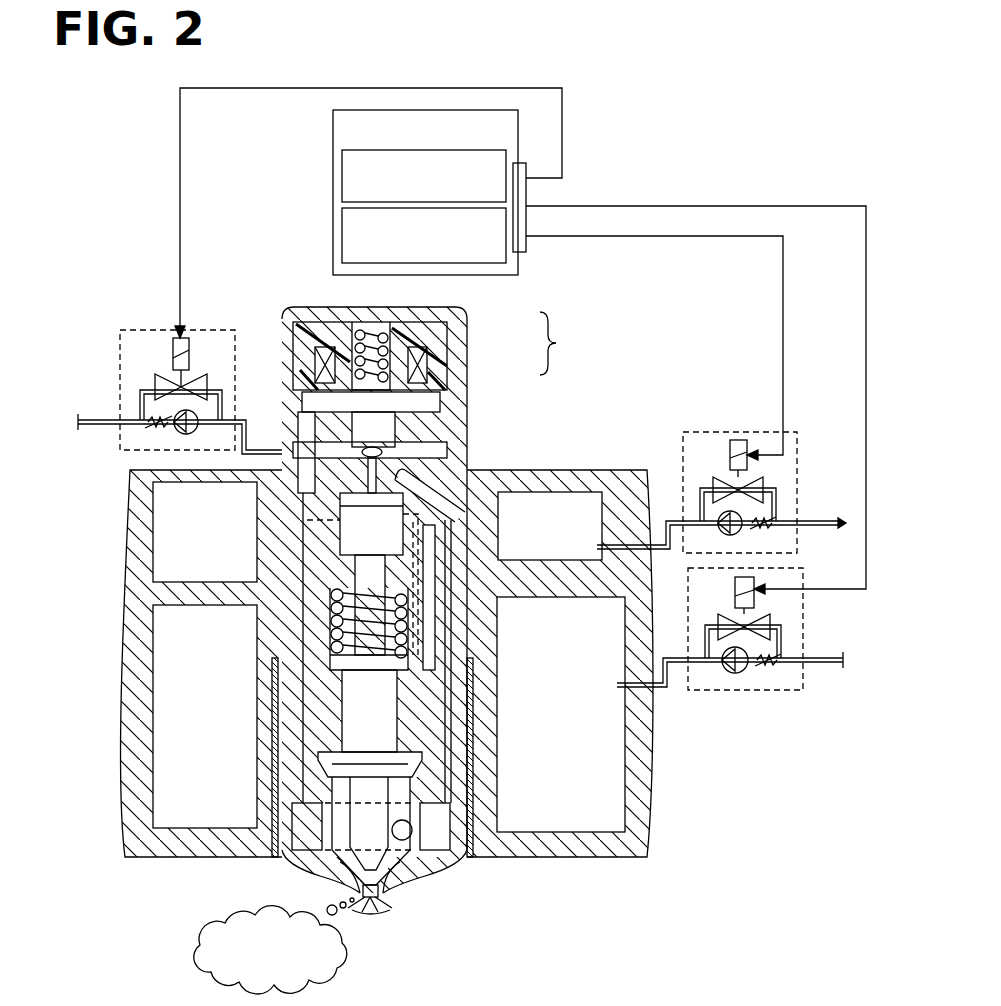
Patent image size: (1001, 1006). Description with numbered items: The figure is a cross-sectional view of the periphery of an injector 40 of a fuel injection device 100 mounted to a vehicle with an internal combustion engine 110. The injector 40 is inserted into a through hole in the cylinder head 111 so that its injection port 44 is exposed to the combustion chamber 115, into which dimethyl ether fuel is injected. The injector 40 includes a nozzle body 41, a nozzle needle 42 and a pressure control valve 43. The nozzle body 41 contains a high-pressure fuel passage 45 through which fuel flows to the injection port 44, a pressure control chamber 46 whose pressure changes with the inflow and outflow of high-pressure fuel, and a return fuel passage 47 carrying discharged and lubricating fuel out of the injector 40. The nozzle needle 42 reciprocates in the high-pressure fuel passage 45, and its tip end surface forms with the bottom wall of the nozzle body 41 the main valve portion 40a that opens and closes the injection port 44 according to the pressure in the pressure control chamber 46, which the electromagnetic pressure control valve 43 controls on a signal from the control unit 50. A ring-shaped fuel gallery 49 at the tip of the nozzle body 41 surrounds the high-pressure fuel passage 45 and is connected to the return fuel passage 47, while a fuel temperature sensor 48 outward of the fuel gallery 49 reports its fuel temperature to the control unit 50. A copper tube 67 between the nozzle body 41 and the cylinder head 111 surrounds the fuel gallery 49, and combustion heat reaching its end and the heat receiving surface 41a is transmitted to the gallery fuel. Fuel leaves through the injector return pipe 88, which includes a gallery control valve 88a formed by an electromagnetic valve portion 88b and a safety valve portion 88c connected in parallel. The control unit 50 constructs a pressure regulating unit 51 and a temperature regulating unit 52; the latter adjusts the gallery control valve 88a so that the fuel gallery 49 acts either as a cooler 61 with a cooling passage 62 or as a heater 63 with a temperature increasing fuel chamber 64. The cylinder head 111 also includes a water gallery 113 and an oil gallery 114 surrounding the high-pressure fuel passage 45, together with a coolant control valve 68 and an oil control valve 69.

The injector 40 is at (378, 624).
The main valve portion 40a is at (396, 890).
The nozzle body 41 is at (452, 856).
The heat receiving surface 41a is at (323, 862).
The nozzle needle 42 is at (370, 678).
The pressure control valve 43 is at (310, 330).
The injection port 44 is at (375, 898).
The high-pressure fuel passage 45 is at (428, 610).
The pressure control chamber 46 is at (393, 503).
The return fuel passage 47 is at (303, 640).
The fuel temperature sensor 48 is at (408, 840).
The fuel gallery 49 is at (305, 833).
The control unit 50 is at (520, 341).
The pressure regulating unit 51 is at (342, 178).
The temperature regulating unit 52 is at (342, 236).
The cooler 61 is at (153, 663).
The cooling passage 62 is at (458, 811).
The heater 63 is at (150, 622).
The temperature increasing fuel chamber 64 is at (440, 860).
The copper tube 67 is at (472, 708).
The coolant control valve 68 is at (712, 432).
The oil control valve 69 is at (708, 690).
The injector return pipe 88 is at (177, 370).
The gallery control valve 88a is at (208, 328).
The electromagnetic valve portion 88b is at (155, 380).
The safety valve portion 88c is at (168, 430).
The fuel injection device 100 is at (573, 343).
The internal combustion engine 110 is at (557, 639).
The cylinder head 111 is at (592, 470).
The water gallery 113 is at (190, 582).
The oil gallery 114 is at (172, 830).
The combustion chamber 115 is at (462, 930).